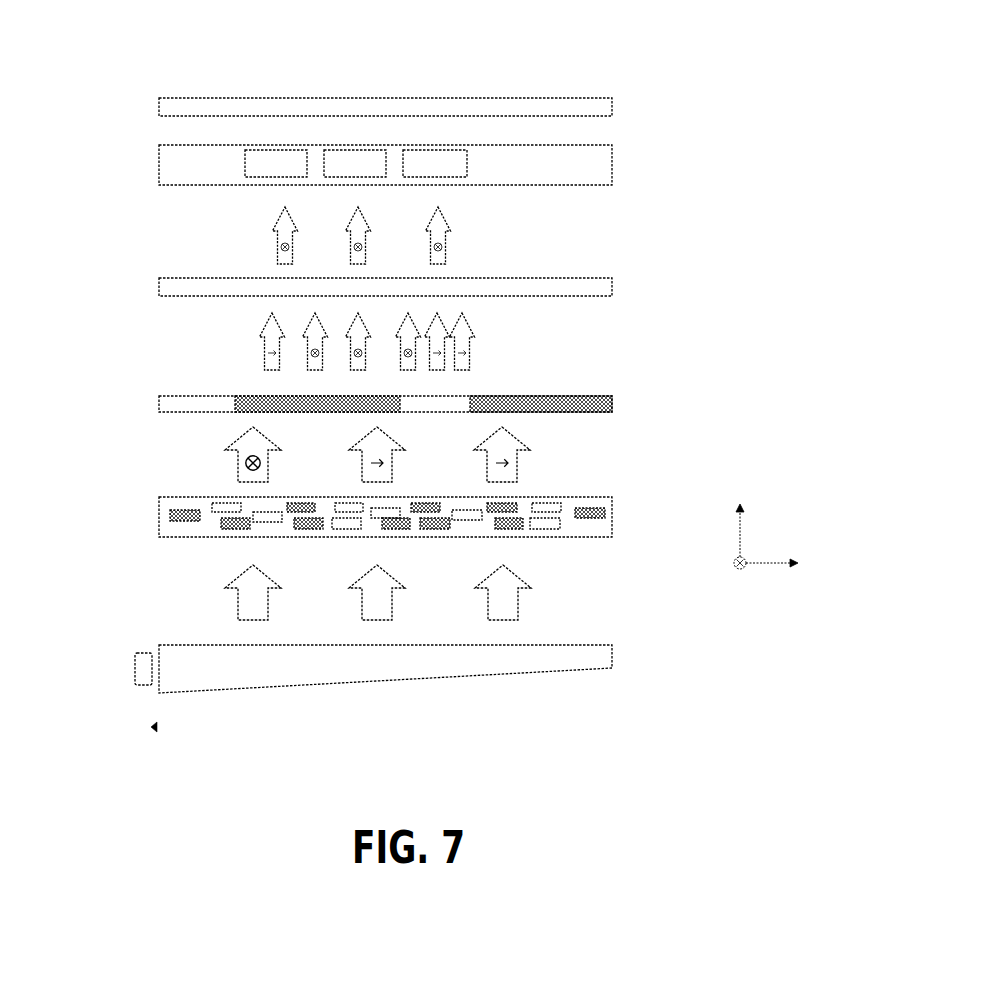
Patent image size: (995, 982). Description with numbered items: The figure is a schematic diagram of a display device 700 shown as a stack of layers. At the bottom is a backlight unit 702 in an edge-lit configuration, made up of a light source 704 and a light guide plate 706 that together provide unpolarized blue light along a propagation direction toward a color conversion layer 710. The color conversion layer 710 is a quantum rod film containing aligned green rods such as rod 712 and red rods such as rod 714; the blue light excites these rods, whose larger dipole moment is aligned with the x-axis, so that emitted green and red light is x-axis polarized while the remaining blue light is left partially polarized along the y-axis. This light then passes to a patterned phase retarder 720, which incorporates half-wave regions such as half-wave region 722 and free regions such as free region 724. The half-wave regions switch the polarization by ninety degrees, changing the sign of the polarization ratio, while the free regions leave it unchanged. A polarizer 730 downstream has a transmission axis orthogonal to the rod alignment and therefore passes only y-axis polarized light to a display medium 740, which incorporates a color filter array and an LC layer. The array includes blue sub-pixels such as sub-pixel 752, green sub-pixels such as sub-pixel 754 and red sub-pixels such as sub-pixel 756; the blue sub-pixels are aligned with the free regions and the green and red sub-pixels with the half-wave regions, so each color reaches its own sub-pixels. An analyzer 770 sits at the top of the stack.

The display device 700 is at (46, 21).
The backlight unit 702 is at (154, 728).
The light source 704 is at (133, 668).
The light guide plate 706 is at (614, 658).
The color conversion layer 710 is at (417, 509).
The green rod 712 is at (268, 523).
The red rod 714 is at (432, 531).
The patterned phase retarder 720 is at (417, 383).
The half-wave region 722 is at (245, 394).
The free region 724 is at (466, 395).
The polarizer 730 is at (614, 287).
The display medium 740 is at (417, 149).
The blue sub-pixel 752 is at (452, 172).
The green sub-pixel 754 is at (293, 172).
The red sub-pixel 756 is at (372, 172).
The analyzer 770 is at (614, 106).